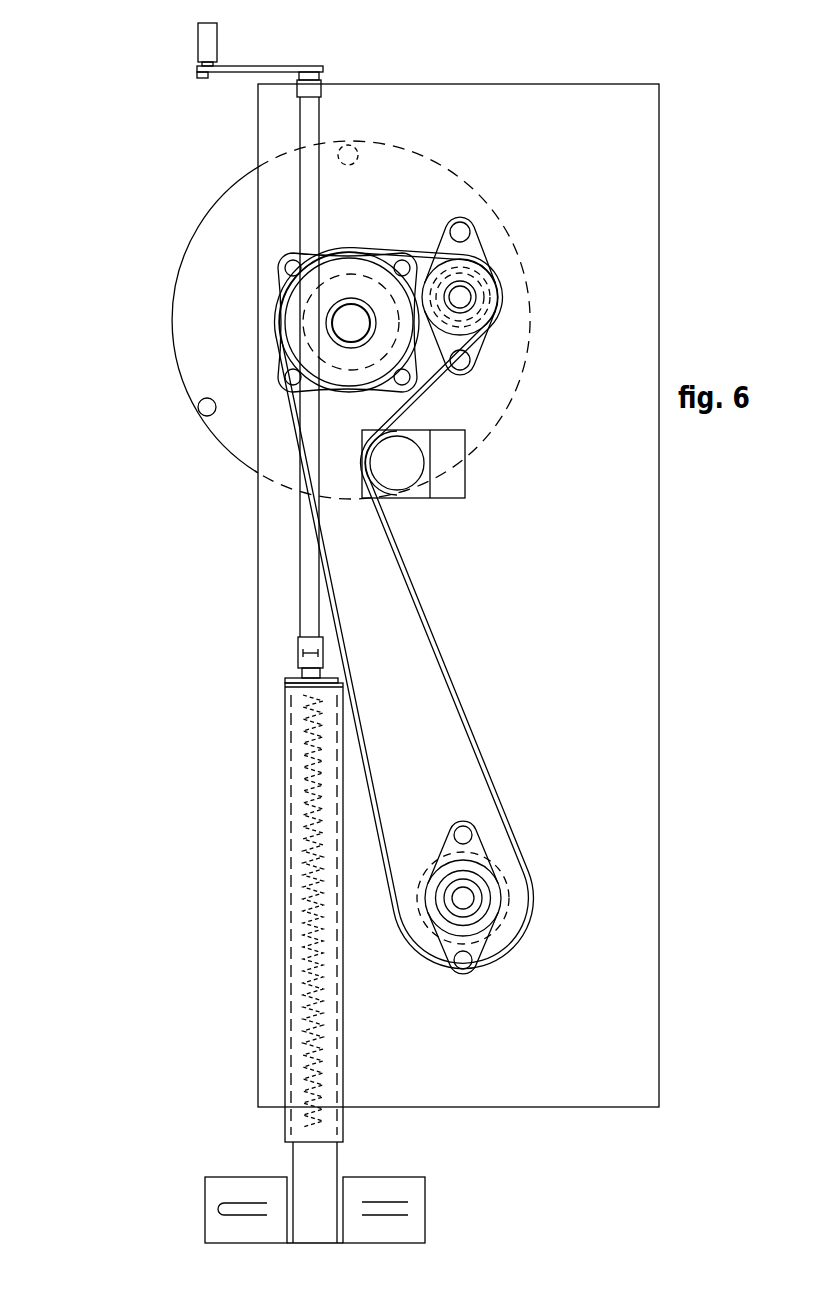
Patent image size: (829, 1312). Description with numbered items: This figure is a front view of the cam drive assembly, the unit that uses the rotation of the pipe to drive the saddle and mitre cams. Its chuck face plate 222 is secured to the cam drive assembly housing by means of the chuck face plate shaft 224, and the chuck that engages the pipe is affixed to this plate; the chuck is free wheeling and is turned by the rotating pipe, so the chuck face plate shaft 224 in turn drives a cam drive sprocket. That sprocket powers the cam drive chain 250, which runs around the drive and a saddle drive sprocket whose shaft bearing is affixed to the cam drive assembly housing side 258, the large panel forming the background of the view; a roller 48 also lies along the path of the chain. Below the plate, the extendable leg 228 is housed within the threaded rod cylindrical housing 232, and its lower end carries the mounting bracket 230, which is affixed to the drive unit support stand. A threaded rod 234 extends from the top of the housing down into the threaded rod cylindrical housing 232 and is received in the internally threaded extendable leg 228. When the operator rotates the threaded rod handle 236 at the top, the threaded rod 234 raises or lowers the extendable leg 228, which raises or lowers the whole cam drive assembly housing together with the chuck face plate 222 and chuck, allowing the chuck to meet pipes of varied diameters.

The tensioner roller 48 is at (540, 520).
The chuck face plate 222 is at (200, 345).
The chuck face plate shaft 224 is at (350, 325).
The extendable leg 228 is at (318, 1162).
The mounting bracket 230 is at (223, 1195).
The threaded rod cylindrical housing 232 is at (341, 1002).
The threaded rod 234 is at (320, 1058).
The threaded rod handle 236 is at (197, 54).
The cam drive chain 250 is at (435, 635).
The cam drive assembly housing side 258 is at (602, 137).